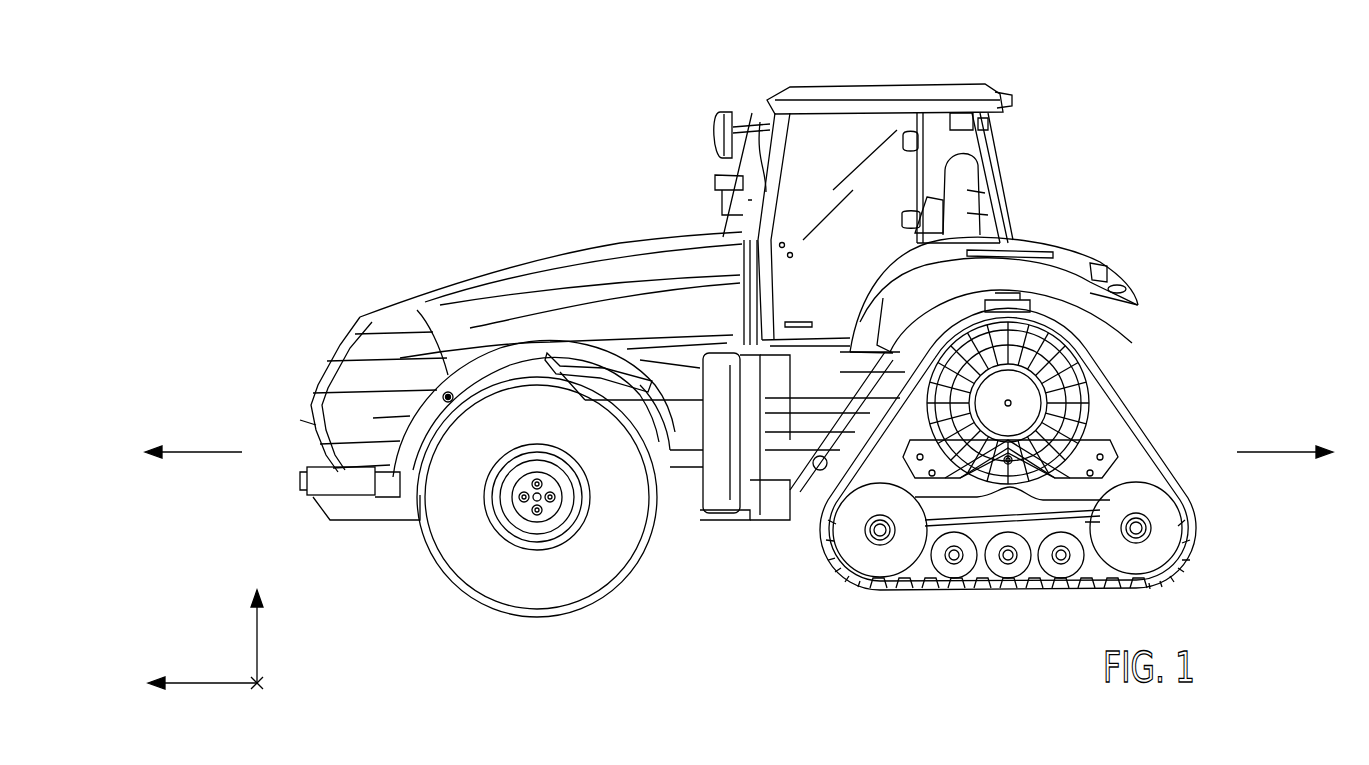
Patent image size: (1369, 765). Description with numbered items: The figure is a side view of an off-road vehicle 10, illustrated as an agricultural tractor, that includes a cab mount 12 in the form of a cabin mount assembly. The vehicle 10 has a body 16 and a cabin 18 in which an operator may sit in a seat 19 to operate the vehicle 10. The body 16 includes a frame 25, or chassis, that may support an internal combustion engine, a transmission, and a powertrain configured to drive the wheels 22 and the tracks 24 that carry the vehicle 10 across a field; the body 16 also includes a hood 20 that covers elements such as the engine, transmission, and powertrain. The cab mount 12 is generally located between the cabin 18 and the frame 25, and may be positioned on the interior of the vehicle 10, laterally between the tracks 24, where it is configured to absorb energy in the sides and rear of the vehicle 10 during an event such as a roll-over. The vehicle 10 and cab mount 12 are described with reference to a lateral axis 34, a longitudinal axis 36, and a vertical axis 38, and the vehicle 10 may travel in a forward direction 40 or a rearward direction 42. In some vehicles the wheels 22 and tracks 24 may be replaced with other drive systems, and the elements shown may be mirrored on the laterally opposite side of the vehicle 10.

The off-road vehicle 10 is at (762, 376).
The cab mount 12 is at (1132, 344).
The body 16 is at (573, 243).
The cabin 18 is at (945, 221).
The seat 19 is at (943, 195).
The hood 20 is at (482, 272).
The wheels 22 is at (556, 620).
The tracks 24 is at (1150, 420).
The frame 25 is at (790, 462).
The lateral axis 34 is at (257, 690).
The longitudinal axis 36 is at (210, 688).
The vertical axis 38 is at (257, 640).
The forward direction 40 is at (200, 452).
The rearward direction 42 is at (1280, 452).